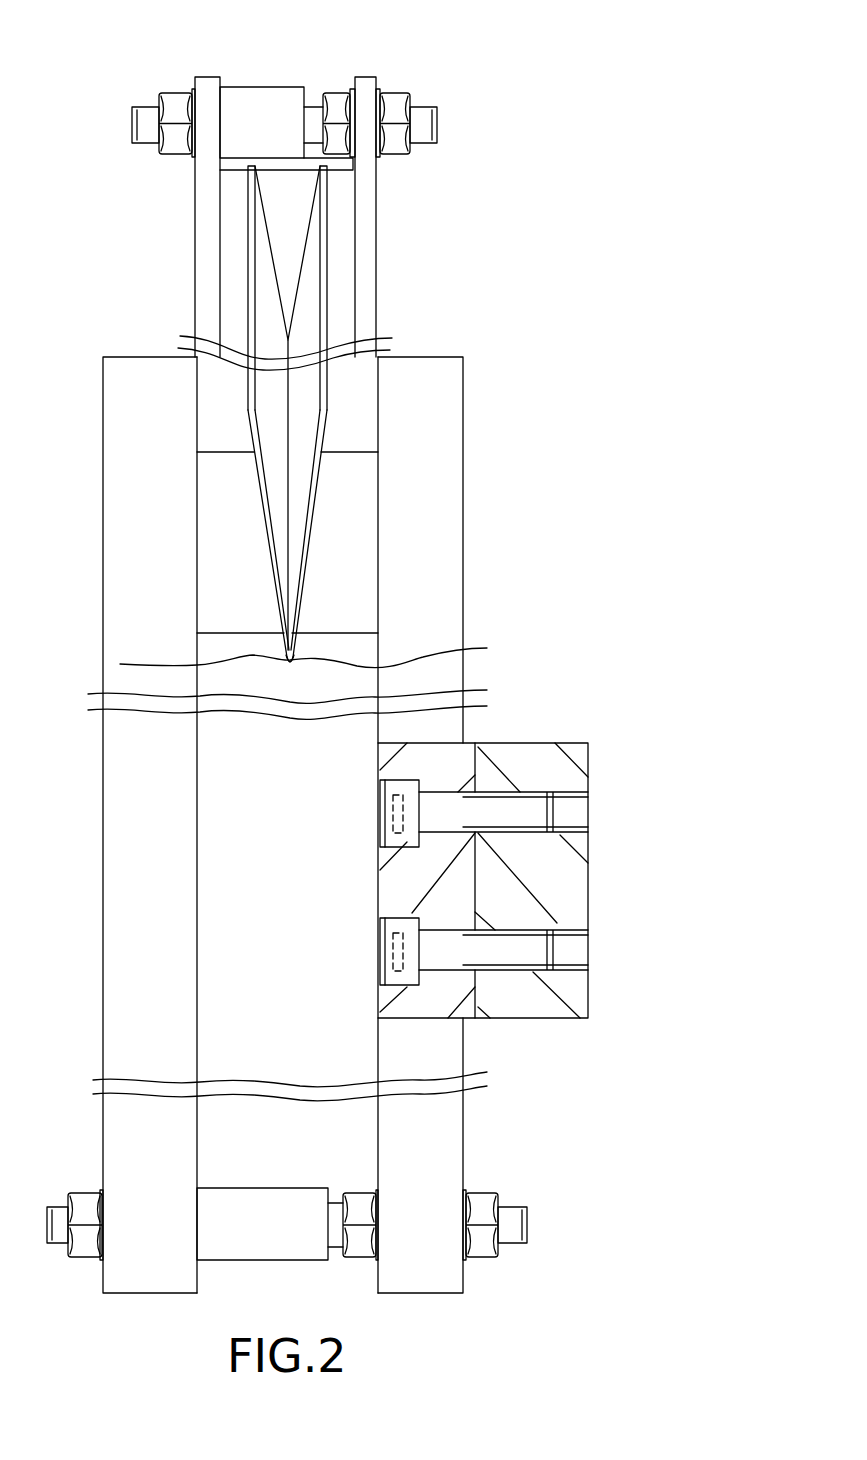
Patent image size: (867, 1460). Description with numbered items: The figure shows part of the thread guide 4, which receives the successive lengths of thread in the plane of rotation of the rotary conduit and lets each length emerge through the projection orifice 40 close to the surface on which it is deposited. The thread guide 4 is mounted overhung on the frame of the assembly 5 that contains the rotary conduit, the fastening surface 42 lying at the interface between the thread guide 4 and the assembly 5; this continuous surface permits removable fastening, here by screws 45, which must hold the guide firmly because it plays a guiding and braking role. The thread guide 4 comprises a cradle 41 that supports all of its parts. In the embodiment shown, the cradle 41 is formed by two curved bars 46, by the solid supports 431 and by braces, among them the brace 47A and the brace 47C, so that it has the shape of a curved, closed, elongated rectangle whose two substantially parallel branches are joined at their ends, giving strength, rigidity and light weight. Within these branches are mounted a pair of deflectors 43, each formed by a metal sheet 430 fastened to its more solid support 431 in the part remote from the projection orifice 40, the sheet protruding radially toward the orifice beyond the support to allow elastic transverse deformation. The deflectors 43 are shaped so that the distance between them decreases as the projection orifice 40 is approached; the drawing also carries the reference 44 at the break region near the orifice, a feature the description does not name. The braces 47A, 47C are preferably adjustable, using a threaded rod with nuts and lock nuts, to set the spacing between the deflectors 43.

The thread guide 4 is at (642, 383).
The assembly 5 is at (590, 880).
The projection orifice 40 is at (290, 665).
The cradle 41 is at (247, 78).
The fastening surface 42 is at (483, 1021).
The deflectors 43 is at (262, 347).
The cutting edge line 44 is at (120, 664).
The screws 45 is at (512, 808).
The curved bars 46 is at (418, 587).
The brace 47A is at (262, 113).
The brace 47C is at (278, 1243).
The metal sheet 430 is at (246, 233).
The support 431 is at (215, 277).